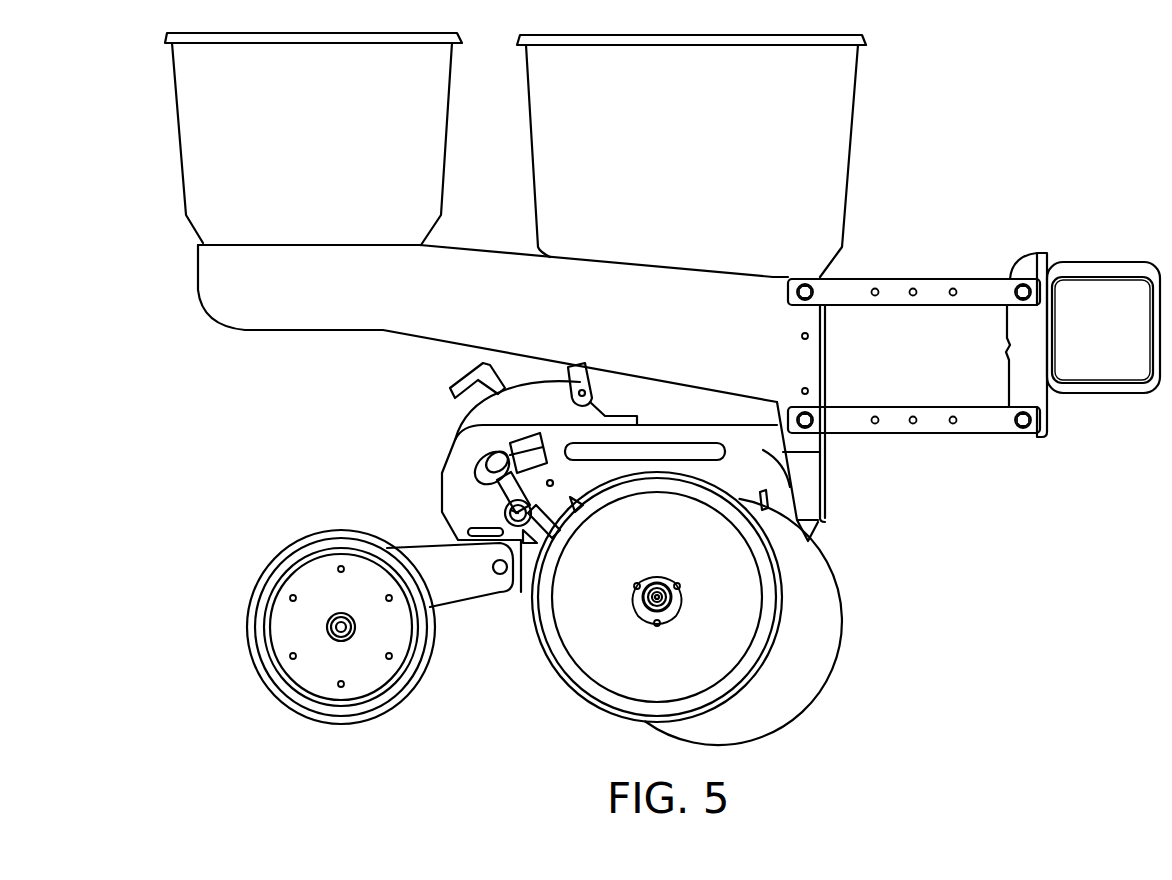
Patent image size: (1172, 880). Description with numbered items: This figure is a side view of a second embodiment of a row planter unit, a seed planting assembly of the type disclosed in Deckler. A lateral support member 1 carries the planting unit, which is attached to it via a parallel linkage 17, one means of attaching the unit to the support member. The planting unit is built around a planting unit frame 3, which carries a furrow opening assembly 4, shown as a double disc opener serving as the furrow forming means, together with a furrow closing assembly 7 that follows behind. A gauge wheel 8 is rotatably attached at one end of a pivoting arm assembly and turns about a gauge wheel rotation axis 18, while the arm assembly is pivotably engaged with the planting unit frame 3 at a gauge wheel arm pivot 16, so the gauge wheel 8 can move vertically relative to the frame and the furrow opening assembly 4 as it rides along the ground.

The lateral support member 1 is at (1100, 385).
The planting unit frame 3 is at (720, 485).
The furrow opening assembly 4 is at (802, 690).
The furrow closing assembly 7 is at (372, 703).
The gauge wheel 8 is at (598, 697).
The gauge wheel arm pivot 16 is at (505, 513).
The parallel linkage 17 is at (898, 284).
The gauge wheel rotation axis 18 is at (672, 606).